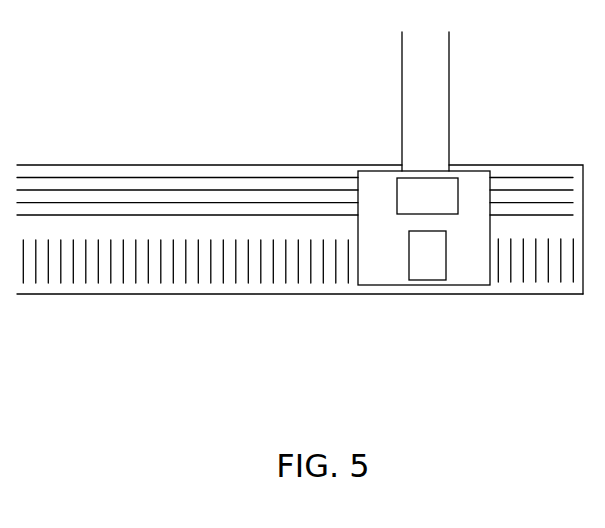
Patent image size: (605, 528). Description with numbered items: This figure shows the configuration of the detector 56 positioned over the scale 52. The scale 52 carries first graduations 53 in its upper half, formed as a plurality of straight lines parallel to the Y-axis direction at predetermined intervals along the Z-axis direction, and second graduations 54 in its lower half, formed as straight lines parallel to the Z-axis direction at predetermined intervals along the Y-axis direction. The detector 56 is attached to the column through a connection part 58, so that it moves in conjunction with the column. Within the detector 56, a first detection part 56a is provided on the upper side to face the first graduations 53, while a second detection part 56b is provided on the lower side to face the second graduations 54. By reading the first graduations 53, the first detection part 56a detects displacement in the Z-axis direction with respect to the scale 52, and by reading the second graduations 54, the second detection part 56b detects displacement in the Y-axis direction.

The scale 52 is at (316, 164).
The first graduations 53 is at (533, 177).
The second graduations 54 is at (517, 287).
The detector 56 is at (377, 286).
The first detection part 56a is at (466, 166).
The second detection part 56b is at (426, 283).
The connection part 58 is at (440, 75).